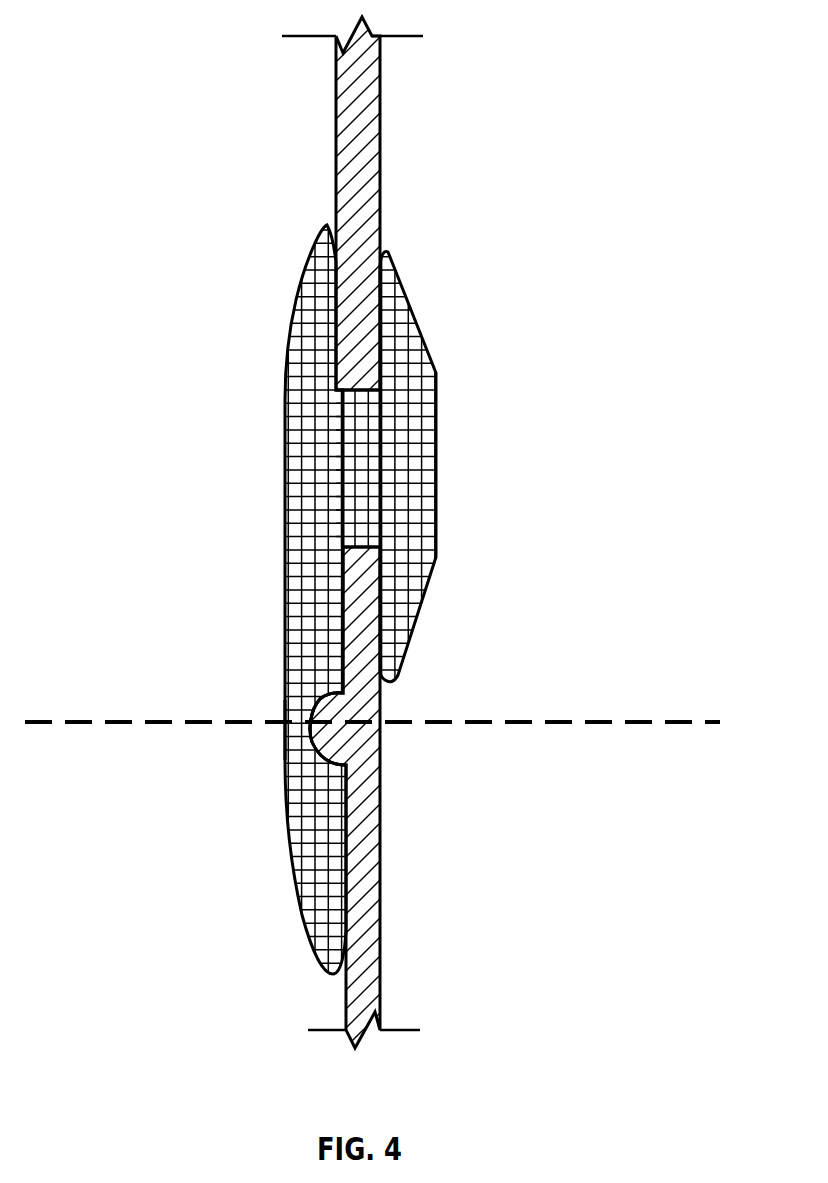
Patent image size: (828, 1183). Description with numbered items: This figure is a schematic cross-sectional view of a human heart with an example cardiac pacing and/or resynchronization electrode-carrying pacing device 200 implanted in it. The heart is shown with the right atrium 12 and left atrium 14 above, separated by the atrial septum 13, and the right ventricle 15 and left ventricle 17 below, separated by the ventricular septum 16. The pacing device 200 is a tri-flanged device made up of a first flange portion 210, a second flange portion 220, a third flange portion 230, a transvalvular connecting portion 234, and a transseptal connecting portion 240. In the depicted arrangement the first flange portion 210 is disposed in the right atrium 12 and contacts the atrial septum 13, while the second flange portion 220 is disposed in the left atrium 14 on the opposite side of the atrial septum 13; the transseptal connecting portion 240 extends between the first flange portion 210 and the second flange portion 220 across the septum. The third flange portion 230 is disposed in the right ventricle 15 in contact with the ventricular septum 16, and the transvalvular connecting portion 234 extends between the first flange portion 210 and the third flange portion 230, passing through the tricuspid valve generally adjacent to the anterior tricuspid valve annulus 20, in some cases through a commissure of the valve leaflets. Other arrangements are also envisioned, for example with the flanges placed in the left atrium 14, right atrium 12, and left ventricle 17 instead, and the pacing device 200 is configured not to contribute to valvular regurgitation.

The atrial septum 13 is at (335, 172).
The ventricular septum 16 is at (380, 875).
The anterior tricuspid valve annulus 20 is at (313, 710).
The transvalvular connecting portion 234 is at (268, 692).
The first flange portion 210 is at (292, 318).
The third flange portion 230 is at (295, 887).
The second flange portion 220 is at (412, 311).
The transseptal connecting portion 240 is at (371, 390).
The pacing device 200 is at (453, 193).
The right atrium 12 is at (123, 492).
The left atrium 14 is at (663, 490).
The right ventricle 15 is at (128, 823).
The left ventricle 17 is at (668, 822).